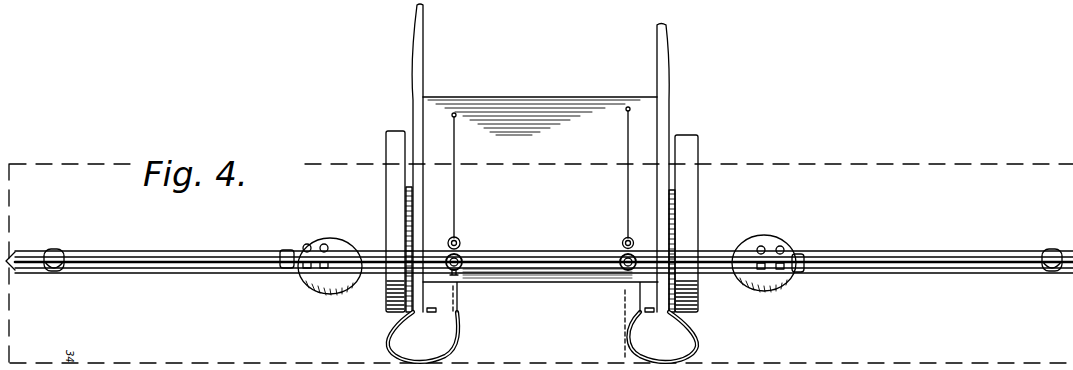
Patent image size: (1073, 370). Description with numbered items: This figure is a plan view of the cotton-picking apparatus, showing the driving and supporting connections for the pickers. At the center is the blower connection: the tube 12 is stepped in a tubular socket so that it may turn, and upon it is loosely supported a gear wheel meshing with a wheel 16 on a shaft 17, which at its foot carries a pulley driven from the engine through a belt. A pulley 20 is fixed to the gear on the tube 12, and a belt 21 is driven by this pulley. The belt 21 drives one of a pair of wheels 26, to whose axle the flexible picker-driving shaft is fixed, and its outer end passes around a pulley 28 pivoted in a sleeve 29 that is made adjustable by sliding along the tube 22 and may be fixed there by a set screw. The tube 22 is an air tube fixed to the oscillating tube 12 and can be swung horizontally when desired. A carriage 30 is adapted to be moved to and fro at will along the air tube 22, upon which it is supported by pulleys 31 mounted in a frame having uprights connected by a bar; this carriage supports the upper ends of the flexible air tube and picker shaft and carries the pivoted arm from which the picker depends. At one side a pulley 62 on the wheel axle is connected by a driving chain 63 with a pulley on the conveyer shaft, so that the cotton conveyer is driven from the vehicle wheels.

The tube 12 is at (463, 260).
The wheel 16 is at (460, 251).
The shaft 17 is at (459, 240).
The pulley 20 is at (462, 271).
The belt 21 is at (160, 252).
The tube 22 is at (158, 270).
The wheels 26 is at (325, 244).
The pulley 28 is at (51, 272).
The sleeve 29 is at (56, 252).
The carriage 30 is at (312, 283).
The pulleys 31 is at (281, 265).
The pulley 62 is at (673, 198).
The driving chain 63 is at (681, 243).